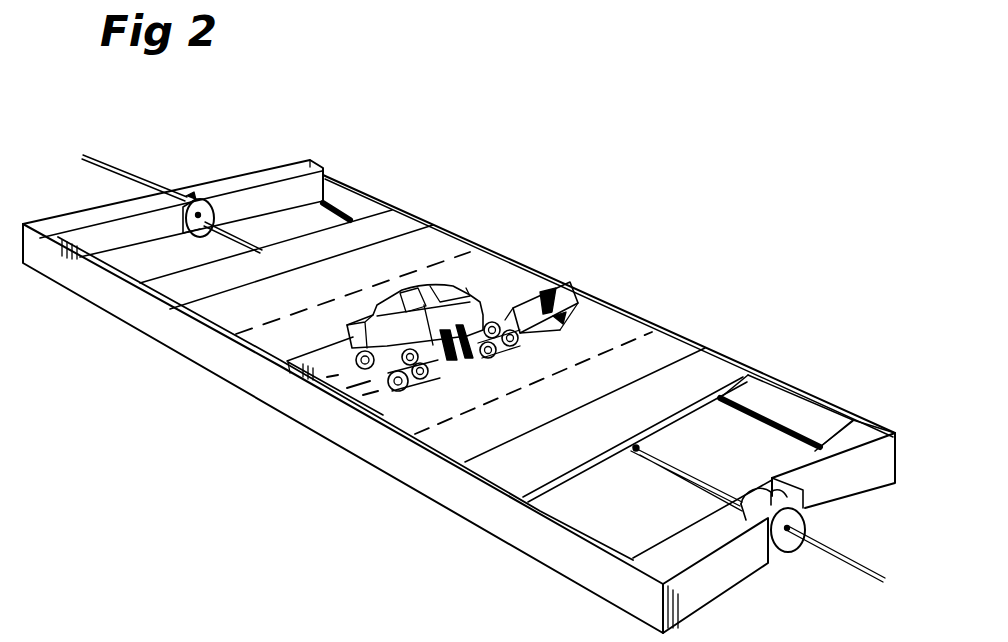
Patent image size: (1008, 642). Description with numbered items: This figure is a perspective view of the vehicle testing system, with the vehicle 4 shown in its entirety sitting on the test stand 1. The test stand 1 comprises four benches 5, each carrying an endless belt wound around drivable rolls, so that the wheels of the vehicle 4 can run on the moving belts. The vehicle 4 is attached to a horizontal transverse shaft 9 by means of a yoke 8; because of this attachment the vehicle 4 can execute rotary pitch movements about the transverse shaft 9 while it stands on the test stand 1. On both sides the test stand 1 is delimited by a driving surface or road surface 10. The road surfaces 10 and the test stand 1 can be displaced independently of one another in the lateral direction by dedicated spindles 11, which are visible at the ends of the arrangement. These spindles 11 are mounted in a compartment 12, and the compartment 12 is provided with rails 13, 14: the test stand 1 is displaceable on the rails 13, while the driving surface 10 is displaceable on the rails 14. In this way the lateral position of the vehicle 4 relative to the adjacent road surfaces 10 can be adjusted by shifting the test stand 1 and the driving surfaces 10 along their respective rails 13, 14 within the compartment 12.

The test stand 1 is at (562, 266).
The vehicle 4 is at (488, 287).
The benches 5 is at (592, 324).
The yoke 8 is at (566, 320).
The horizontal transverse shaft 9 is at (566, 314).
The driving surface 10 is at (437, 244).
The spindles 11 is at (183, 202).
The compartment 12 is at (624, 589).
The rails 13 is at (563, 281).
The rails 14 is at (338, 200).